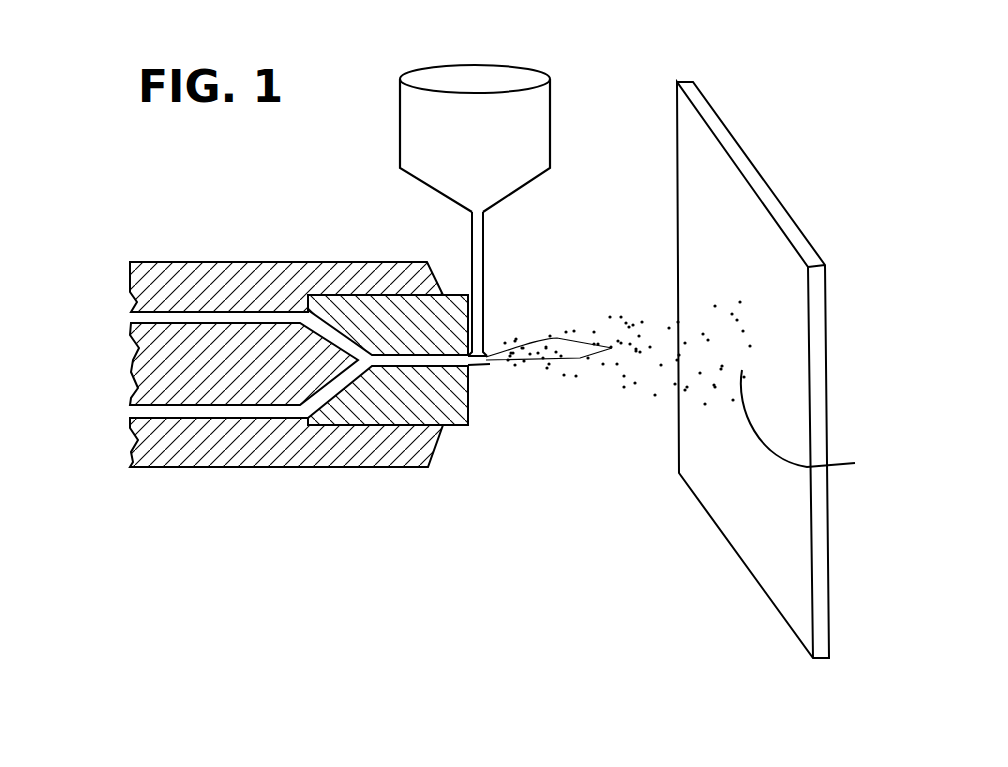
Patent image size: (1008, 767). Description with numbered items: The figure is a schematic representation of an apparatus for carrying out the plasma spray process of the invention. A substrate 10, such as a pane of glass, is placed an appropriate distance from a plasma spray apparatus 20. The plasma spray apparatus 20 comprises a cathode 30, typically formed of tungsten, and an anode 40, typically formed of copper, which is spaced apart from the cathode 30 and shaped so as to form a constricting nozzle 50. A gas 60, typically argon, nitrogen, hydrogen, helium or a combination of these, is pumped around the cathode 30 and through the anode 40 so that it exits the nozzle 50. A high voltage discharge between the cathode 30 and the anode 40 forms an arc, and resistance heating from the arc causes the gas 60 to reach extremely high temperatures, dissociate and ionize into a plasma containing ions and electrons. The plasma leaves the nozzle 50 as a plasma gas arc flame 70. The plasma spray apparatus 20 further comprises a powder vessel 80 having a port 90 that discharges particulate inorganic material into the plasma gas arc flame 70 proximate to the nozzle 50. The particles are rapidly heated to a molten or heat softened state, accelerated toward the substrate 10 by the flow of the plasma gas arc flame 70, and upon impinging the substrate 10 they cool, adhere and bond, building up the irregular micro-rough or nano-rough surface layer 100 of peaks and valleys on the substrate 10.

The substrate 10 is at (715, 227).
The plasma spray apparatus 20 is at (284, 336).
The cathode 30 is at (253, 385).
The anode 40 is at (394, 312).
The constricting nozzle 50 is at (473, 367).
The gas 60 is at (128, 317).
The plasma gas arc flame 70 is at (563, 357).
The powder vessel 80 is at (478, 73).
The port 90 is at (483, 350).
The coating 100 is at (827, 423).